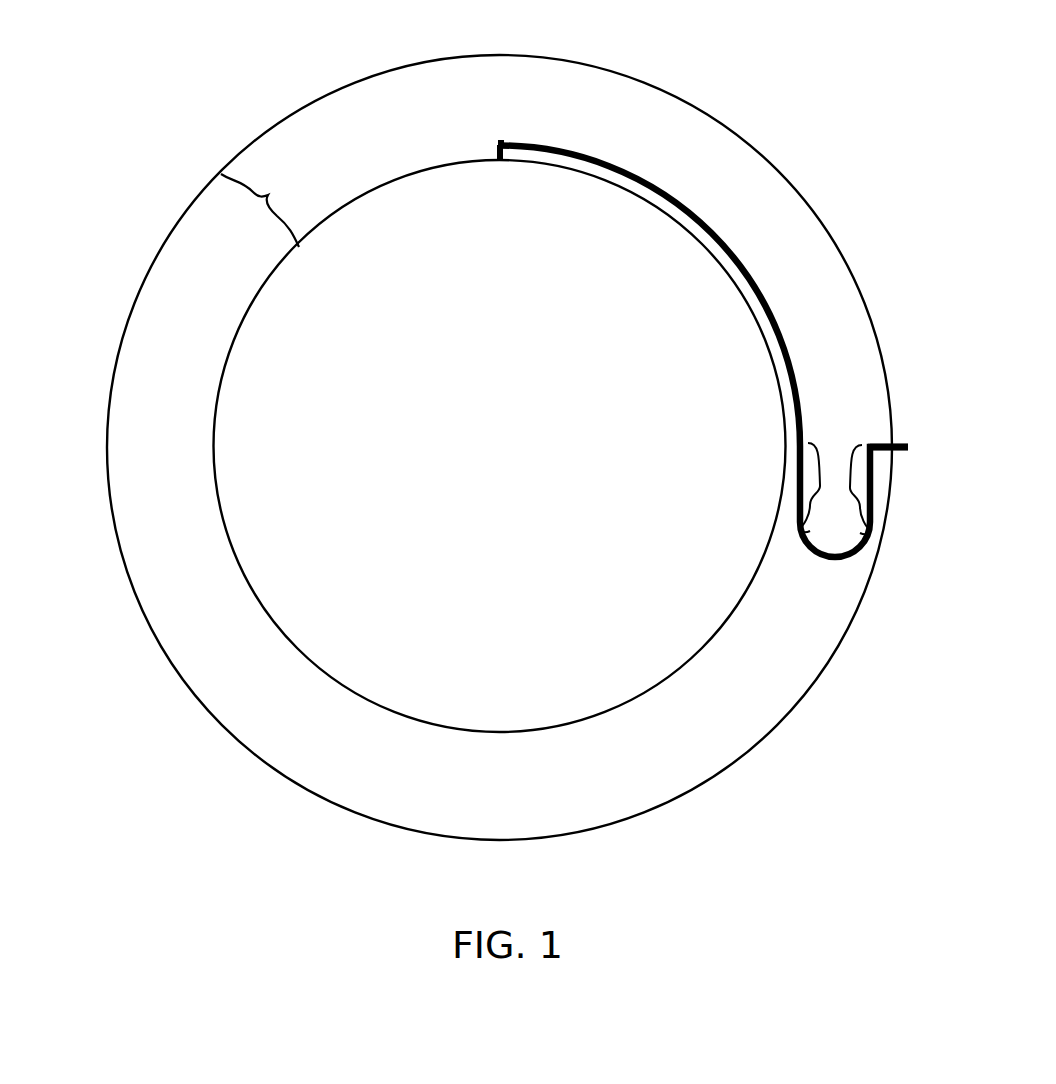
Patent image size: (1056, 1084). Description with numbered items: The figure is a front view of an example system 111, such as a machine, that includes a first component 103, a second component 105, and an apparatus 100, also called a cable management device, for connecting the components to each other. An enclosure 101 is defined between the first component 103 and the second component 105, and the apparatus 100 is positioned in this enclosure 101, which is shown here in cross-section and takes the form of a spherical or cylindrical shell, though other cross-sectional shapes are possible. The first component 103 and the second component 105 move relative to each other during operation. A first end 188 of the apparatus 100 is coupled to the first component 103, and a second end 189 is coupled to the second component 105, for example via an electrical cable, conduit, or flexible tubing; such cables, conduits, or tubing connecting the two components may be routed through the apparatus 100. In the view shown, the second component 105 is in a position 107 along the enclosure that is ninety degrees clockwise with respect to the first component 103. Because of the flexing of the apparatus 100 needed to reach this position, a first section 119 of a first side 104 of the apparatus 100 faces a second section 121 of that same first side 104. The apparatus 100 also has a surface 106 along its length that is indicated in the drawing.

The apparatus 100 is at (668, 193).
The enclosure 101 is at (268, 195).
The first component 103 is at (503, 162).
The first side 104 is at (601, 150).
The second component 105 is at (910, 447).
The inner surface of liner 106 is at (700, 233).
The position 107 is at (968, 447).
The system 111 is at (903, 97).
The first section 119 is at (826, 430).
The second section 121 is at (858, 445).
The first end 188 is at (498, 141).
The second end 189 is at (900, 434).